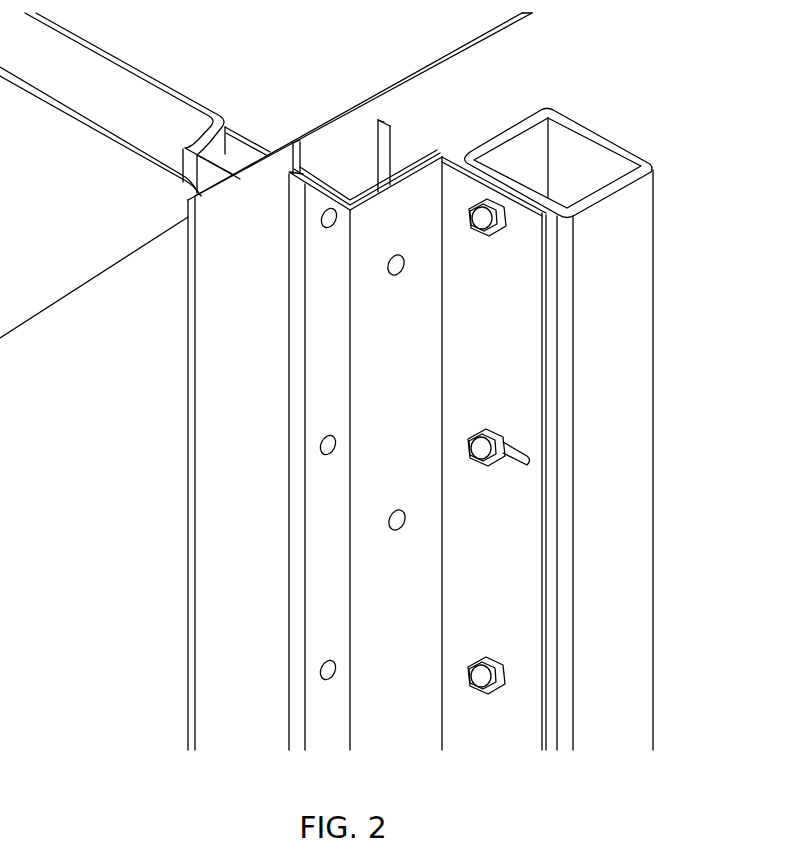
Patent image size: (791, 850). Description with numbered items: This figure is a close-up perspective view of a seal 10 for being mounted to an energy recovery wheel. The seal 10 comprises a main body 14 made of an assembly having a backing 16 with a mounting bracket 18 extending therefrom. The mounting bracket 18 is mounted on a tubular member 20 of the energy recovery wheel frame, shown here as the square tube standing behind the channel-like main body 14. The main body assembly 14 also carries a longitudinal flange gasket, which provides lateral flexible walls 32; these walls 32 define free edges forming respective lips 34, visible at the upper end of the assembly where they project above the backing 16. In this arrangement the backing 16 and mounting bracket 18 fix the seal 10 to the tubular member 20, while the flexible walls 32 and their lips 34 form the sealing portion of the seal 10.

The seal 10 is at (521, 313).
The main body 14 is at (367, 240).
The backing 16 is at (383, 367).
The mounting bracket 18 is at (510, 263).
The tubular member 20 is at (632, 448).
The lateral flexible walls 32 is at (298, 248).
The lips 34 is at (303, 173).